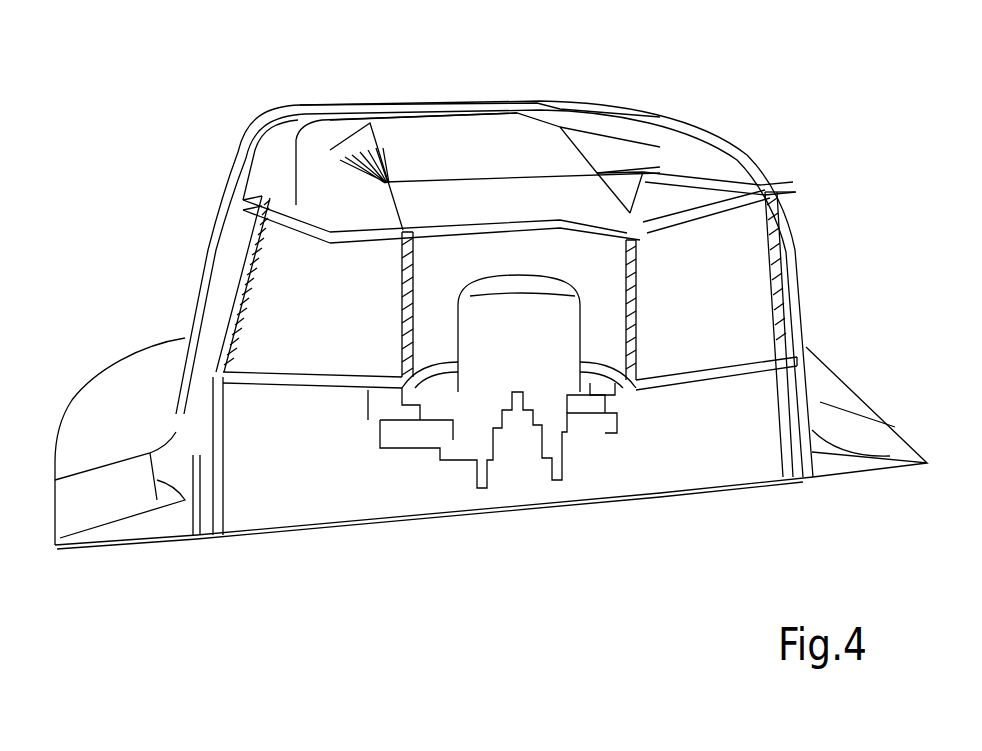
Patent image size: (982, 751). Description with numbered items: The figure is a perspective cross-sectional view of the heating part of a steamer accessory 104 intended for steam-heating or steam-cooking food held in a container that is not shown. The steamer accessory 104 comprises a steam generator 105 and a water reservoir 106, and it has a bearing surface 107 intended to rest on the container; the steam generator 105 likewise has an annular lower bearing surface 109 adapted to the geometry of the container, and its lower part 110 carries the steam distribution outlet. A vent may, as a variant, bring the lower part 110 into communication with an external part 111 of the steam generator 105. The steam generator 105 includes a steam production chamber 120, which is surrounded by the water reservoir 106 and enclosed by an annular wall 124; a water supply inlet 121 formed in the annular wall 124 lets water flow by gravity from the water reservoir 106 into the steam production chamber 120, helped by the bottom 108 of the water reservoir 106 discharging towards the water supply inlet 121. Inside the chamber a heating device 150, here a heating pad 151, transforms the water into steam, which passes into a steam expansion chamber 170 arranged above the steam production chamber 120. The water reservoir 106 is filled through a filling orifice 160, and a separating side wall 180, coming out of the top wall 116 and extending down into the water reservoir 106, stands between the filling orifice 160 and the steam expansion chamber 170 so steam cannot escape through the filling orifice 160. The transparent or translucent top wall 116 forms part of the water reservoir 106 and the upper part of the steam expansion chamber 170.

The steamer accessory 104 is at (228, 125).
The top wall 116 is at (285, 153).
The annular wall 124 is at (402, 315).
The water reservoir 106 is at (317, 350).
The steam expansion chamber 170 is at (332, 227).
The heating device 150 is at (512, 272).
The heating pad 151 is at (520, 330).
The filling orifice 160 is at (665, 130).
The steam production chamber 120 is at (623, 310).
The separating side wall 180 is at (691, 257).
The steam generator 105 is at (597, 350).
The water supply inlet 121 is at (630, 370).
The bottom 108 is at (730, 350).
The external part 111 is at (108, 440).
The bearing surface 107 is at (128, 542).
The lower part 110 is at (687, 488).
The annular lower bearing surface 109 is at (917, 467).